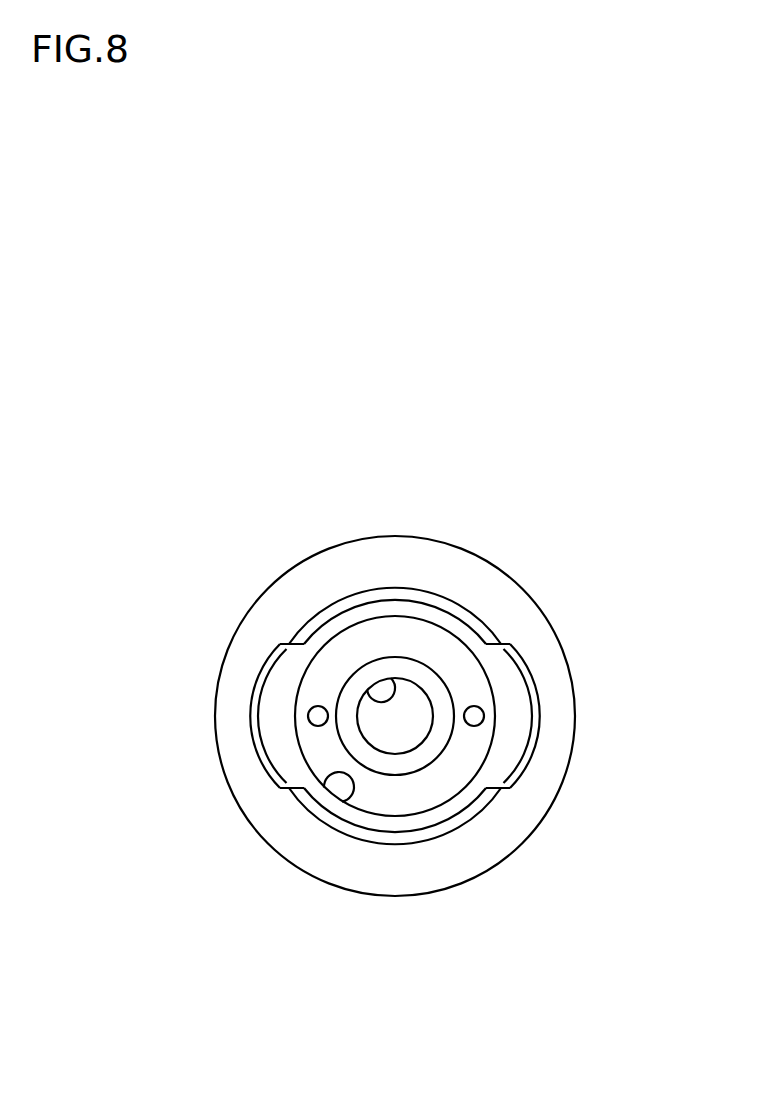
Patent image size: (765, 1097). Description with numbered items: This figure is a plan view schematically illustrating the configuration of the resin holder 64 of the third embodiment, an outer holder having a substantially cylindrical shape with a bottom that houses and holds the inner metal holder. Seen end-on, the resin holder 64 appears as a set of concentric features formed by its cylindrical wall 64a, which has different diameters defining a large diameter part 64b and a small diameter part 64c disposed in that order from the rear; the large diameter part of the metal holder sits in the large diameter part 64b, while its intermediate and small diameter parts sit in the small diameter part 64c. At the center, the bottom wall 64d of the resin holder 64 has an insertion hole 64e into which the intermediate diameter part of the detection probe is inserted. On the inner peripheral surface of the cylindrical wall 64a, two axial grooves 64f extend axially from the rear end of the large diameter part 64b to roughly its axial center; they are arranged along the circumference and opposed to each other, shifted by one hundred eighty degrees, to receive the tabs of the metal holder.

The resin holder 64 is at (443, 468).
The cylindrical wall 64a is at (527, 610).
The large diameter part 64b is at (237, 632).
The small diameter part 64c is at (350, 790).
The bottom wall 64d is at (439, 778).
The insertion hole 64e is at (391, 684).
The axial grooves 64f is at (266, 705).